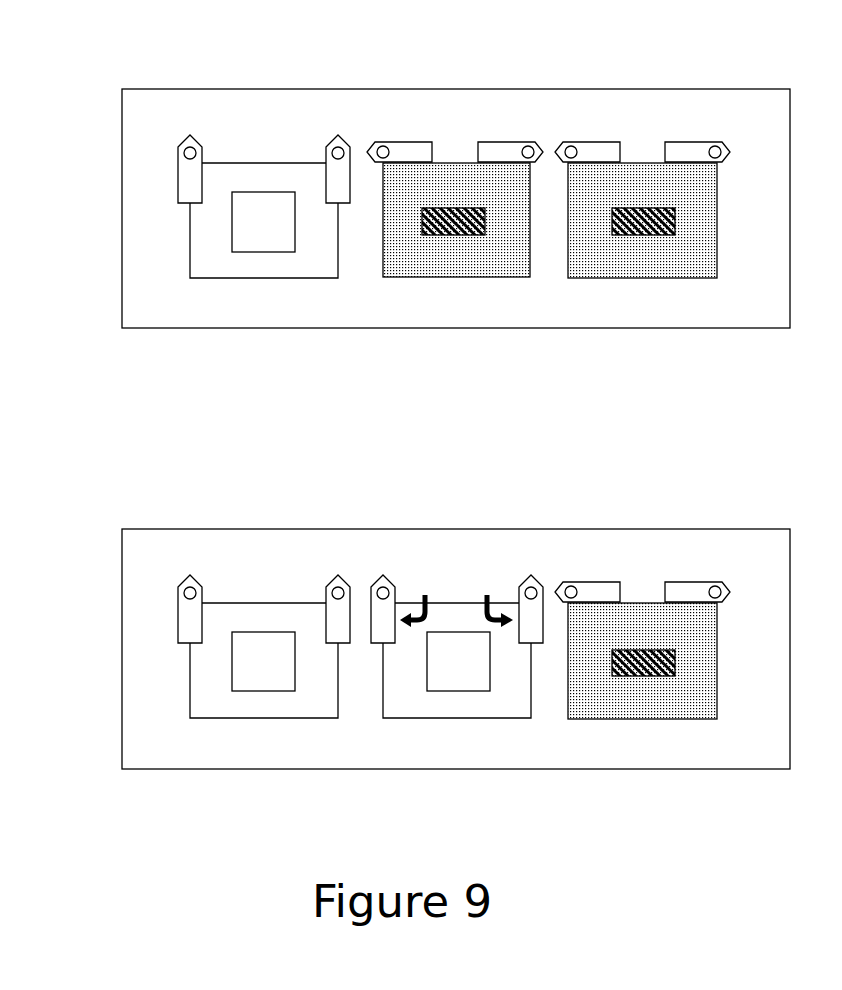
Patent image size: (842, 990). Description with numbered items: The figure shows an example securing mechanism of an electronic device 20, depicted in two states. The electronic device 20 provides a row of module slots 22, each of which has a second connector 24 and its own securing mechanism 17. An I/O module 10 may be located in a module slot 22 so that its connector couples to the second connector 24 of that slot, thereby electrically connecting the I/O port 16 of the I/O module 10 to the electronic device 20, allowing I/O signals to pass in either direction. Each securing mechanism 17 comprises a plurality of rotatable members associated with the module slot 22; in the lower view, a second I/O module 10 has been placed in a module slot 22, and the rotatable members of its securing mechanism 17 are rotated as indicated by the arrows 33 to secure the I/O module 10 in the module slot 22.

The I/O module 10 is at (189, 215).
The I/O port 16 is at (250, 233).
The securing mechanism 17 is at (190, 137).
The electronic device 20 is at (122, 100).
The module slot 22 is at (403, 235).
The second connector 24 is at (477, 233).
The arrows 33 is at (425, 595).